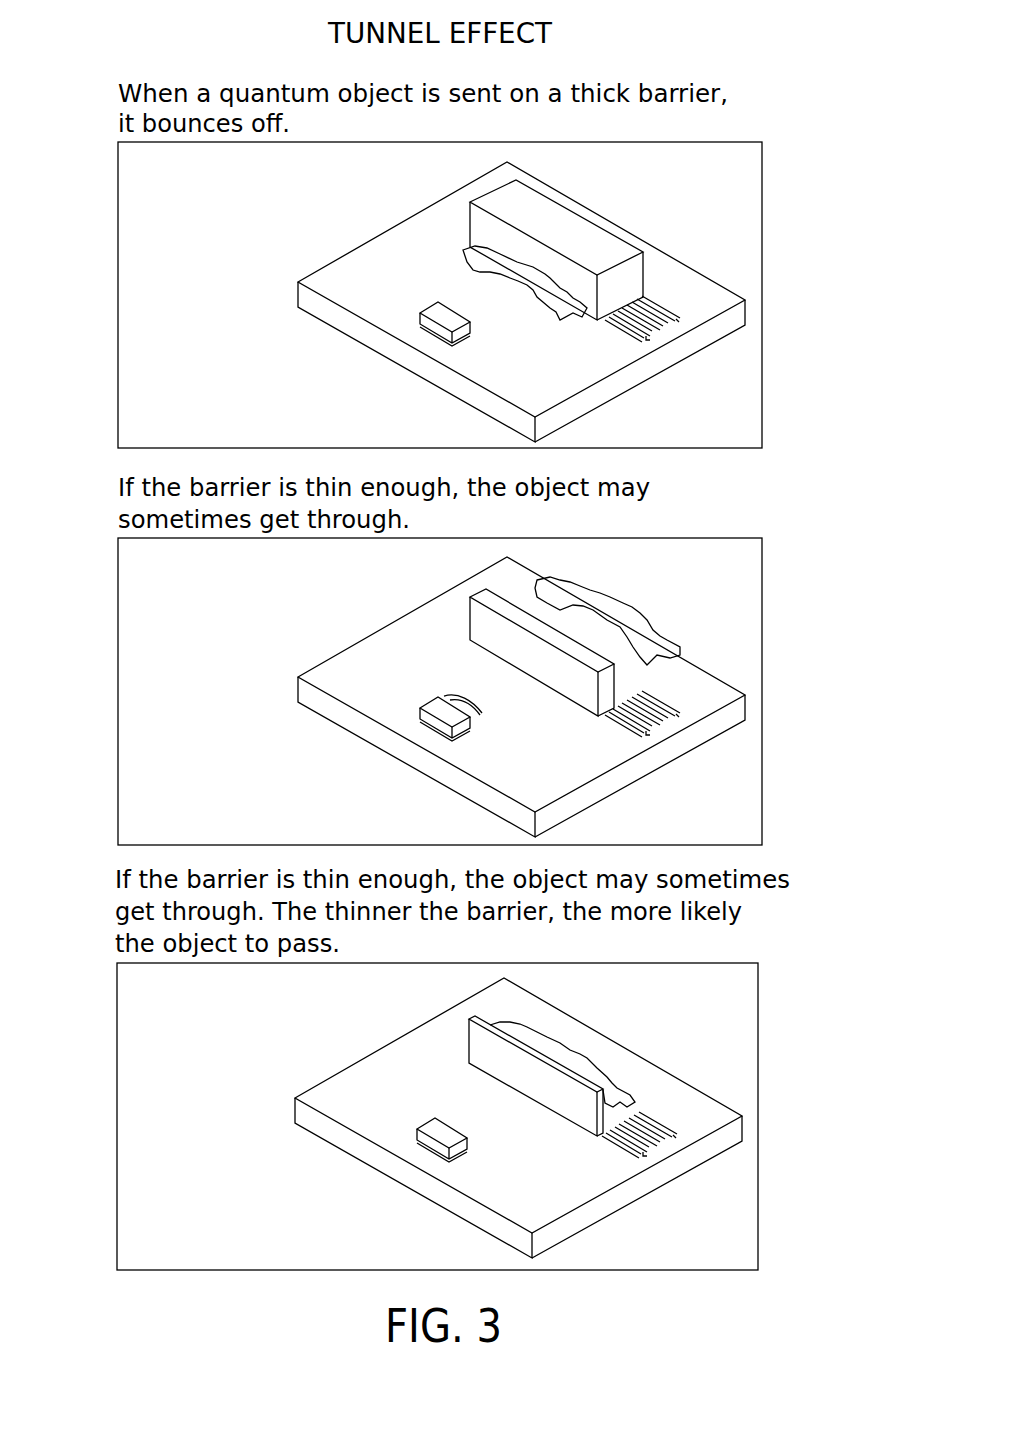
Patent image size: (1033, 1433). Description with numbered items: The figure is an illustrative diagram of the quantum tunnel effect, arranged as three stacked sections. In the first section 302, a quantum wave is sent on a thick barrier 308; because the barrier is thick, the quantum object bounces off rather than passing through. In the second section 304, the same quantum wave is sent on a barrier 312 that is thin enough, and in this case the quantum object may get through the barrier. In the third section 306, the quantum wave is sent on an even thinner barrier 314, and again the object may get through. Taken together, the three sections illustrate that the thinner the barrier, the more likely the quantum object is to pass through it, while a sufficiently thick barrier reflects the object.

The section 302 is at (118, 262).
The section 304 is at (118, 663).
The section 306 is at (117, 1085).
The barrier 308 is at (583, 218).
The barrier 312 is at (468, 618).
The barrier 314 is at (466, 1040).